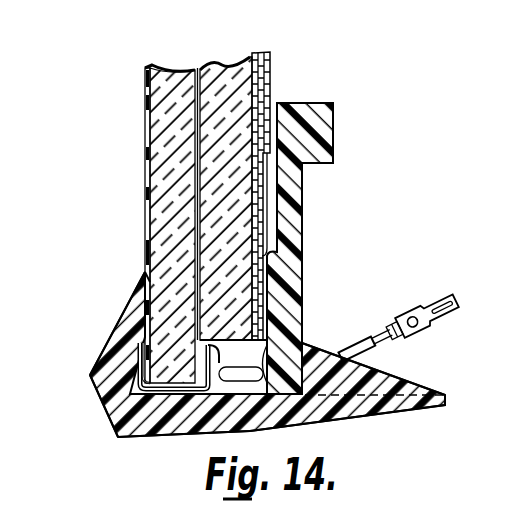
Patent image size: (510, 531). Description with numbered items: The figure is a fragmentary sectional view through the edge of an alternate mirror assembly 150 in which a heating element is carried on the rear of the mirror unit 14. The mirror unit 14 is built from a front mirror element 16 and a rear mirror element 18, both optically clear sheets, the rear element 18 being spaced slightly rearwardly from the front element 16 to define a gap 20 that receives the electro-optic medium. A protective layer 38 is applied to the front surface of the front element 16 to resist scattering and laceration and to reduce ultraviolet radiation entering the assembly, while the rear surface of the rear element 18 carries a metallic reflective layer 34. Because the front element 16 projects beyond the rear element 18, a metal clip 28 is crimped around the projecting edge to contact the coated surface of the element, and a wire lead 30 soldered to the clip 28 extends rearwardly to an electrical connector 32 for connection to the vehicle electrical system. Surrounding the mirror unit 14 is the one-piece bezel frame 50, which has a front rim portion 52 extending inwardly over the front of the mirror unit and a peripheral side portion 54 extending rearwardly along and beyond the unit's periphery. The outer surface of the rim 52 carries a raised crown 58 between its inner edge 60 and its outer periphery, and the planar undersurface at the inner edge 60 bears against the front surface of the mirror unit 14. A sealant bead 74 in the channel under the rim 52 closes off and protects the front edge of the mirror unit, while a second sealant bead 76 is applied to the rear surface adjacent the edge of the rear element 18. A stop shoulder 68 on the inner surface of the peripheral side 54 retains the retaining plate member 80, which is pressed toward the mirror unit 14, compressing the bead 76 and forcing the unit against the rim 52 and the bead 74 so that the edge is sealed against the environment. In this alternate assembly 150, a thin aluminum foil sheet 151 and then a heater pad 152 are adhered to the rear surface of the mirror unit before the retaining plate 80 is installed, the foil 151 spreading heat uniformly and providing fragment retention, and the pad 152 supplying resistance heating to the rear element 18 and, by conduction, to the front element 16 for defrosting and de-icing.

The electro-optic mirror unit 14 is at (135, 205).
The front mirror element 16 is at (172, 74).
The rear mirror element 18 is at (218, 63).
The gap 20 is at (198, 68).
The metal clip 28 is at (163, 437).
The wire lead 30 is at (352, 350).
The electrical connector 32 is at (433, 306).
The reflective layer 34 is at (301, 172).
The protective layer 38 is at (147, 127).
The bezel frame 50 is at (118, 438).
The front rim portion 52 is at (97, 384).
The peripheral side portion 54 is at (283, 413).
The crown 58 is at (90, 375).
The inner edge 60 is at (150, 282).
The stop shoulder 68 is at (345, 365).
The sealant bead 74 is at (133, 325).
The second sealant bead 76 is at (272, 297).
The retaining plate member 80 is at (290, 190).
The alternate mirror assembly 150 is at (202, 194).
The aluminum foil sheet 151 is at (272, 63).
The heater pad 152 is at (270, 87).